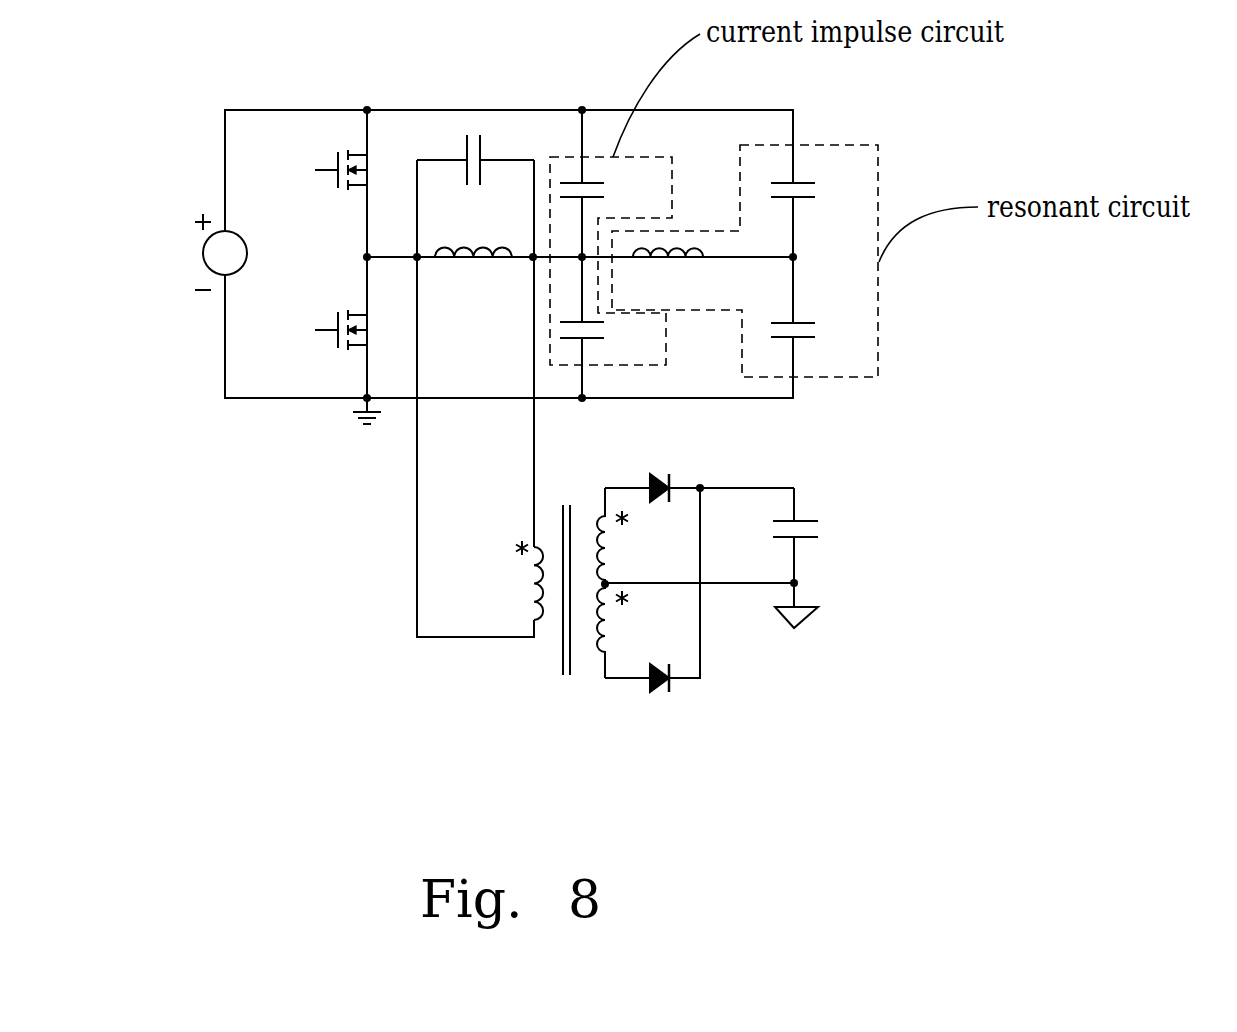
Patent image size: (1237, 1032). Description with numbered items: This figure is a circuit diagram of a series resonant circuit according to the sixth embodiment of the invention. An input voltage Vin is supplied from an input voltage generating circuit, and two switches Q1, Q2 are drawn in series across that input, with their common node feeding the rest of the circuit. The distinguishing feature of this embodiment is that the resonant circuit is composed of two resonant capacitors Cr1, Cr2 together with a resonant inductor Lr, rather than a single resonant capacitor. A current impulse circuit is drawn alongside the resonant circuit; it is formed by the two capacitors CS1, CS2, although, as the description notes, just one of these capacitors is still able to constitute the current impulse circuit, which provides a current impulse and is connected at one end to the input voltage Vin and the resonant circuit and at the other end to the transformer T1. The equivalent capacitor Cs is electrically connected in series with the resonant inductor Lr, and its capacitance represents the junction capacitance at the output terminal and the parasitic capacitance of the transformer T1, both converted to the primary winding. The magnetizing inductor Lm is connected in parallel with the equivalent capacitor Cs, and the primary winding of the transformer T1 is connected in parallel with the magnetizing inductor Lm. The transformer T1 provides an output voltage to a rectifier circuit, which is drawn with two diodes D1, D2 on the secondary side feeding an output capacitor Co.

The input voltage Vin is at (194, 252).
The first switch (MOSFET) Q1 is at (325, 164).
The second switch (MOSFET) Q2 is at (325, 324).
The equivalent capacitor Cs is at (475, 152).
The magnetizing inductor Lm is at (469, 223).
The capacitor CS2 is at (611, 191).
The capacitor CS1 is at (611, 333).
The resonant inductor Lr is at (668, 282).
The resonant capacitor Cr2 is at (819, 191).
The resonant capacitor Cr1 is at (819, 333).
The transformer T1 is at (572, 591).
The first rectifier diode D1 is at (664, 467).
The second rectifier diode D2 is at (664, 704).
The output capacitor Co is at (810, 558).